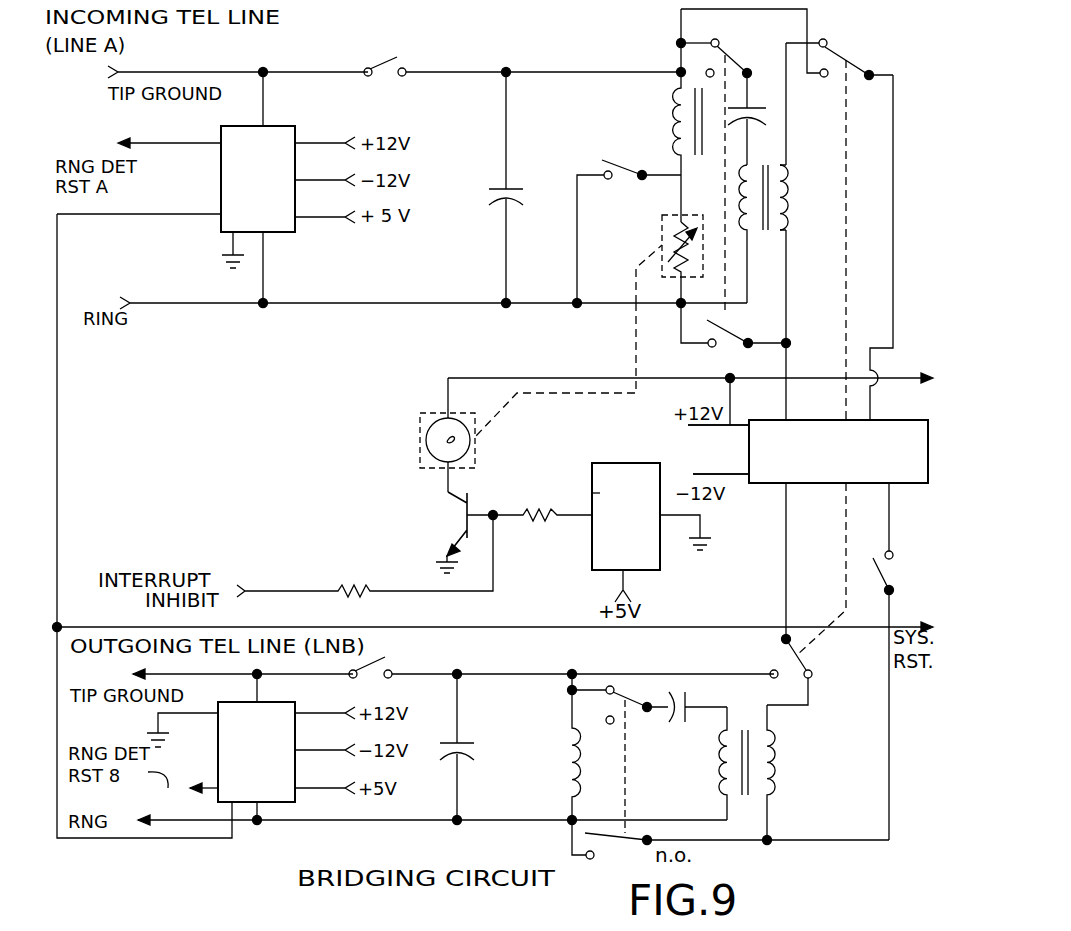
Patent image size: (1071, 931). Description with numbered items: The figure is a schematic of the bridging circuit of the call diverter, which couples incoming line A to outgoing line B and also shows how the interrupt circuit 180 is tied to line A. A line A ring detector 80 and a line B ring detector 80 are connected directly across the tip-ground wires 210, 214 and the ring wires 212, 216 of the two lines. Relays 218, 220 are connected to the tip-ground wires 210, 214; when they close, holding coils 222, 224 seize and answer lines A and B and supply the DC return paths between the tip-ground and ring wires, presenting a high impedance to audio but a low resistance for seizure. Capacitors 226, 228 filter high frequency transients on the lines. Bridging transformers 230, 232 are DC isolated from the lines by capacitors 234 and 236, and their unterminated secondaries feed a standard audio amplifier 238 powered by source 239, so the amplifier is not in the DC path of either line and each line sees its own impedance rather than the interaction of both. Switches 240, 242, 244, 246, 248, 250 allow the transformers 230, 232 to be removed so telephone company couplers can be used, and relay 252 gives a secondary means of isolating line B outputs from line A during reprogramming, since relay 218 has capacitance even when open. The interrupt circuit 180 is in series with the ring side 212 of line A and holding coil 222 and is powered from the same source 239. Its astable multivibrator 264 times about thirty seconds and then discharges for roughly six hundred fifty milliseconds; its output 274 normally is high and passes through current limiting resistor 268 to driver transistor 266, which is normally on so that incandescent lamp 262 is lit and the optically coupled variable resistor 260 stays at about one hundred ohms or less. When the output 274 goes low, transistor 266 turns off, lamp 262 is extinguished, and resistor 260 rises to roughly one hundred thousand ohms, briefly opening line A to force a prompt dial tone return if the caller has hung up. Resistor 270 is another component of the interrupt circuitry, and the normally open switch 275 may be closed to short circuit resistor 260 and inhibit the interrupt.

The ring detector 80 is at (265, 140).
The interrupt circuit 180 is at (315, 476).
The tip-ground wire 210 is at (212, 93).
The ring wire 212 is at (134, 295).
The tip-ground wire 214 is at (133, 672).
The ring wire 216 is at (135, 812).
The relay 218 is at (378, 62).
The relay 220 is at (392, 670).
The holding coil 222 is at (677, 106).
The holding coil 224 is at (573, 783).
The capacitor 226 is at (520, 187).
The capacitor 228 is at (483, 760).
The bridging transformer 230 is at (772, 164).
The bridging transformer 232 is at (764, 752).
The isolating capacitor 234 is at (762, 108).
The isolating capacitor 236 is at (688, 706).
The audio amplifier 238 is at (760, 443).
The voltage source 239 is at (705, 472).
The switch 240 is at (738, 63).
The switch 242 is at (860, 53).
The switch 244 is at (736, 338).
The switch 246 is at (640, 694).
The switch 248 is at (825, 666).
The switch 250 is at (621, 837).
The relay 252 is at (890, 574).
The variable resistor 260 is at (665, 233).
The incandescent lamp 262 is at (413, 438).
The astable multivibrator 264 is at (651, 532).
The driver transistor 266 is at (437, 543).
The current limiting resistor 268 is at (545, 497).
The resistor 270 is at (353, 574).
The output 274 is at (600, 493).
The switch 275 is at (618, 169).